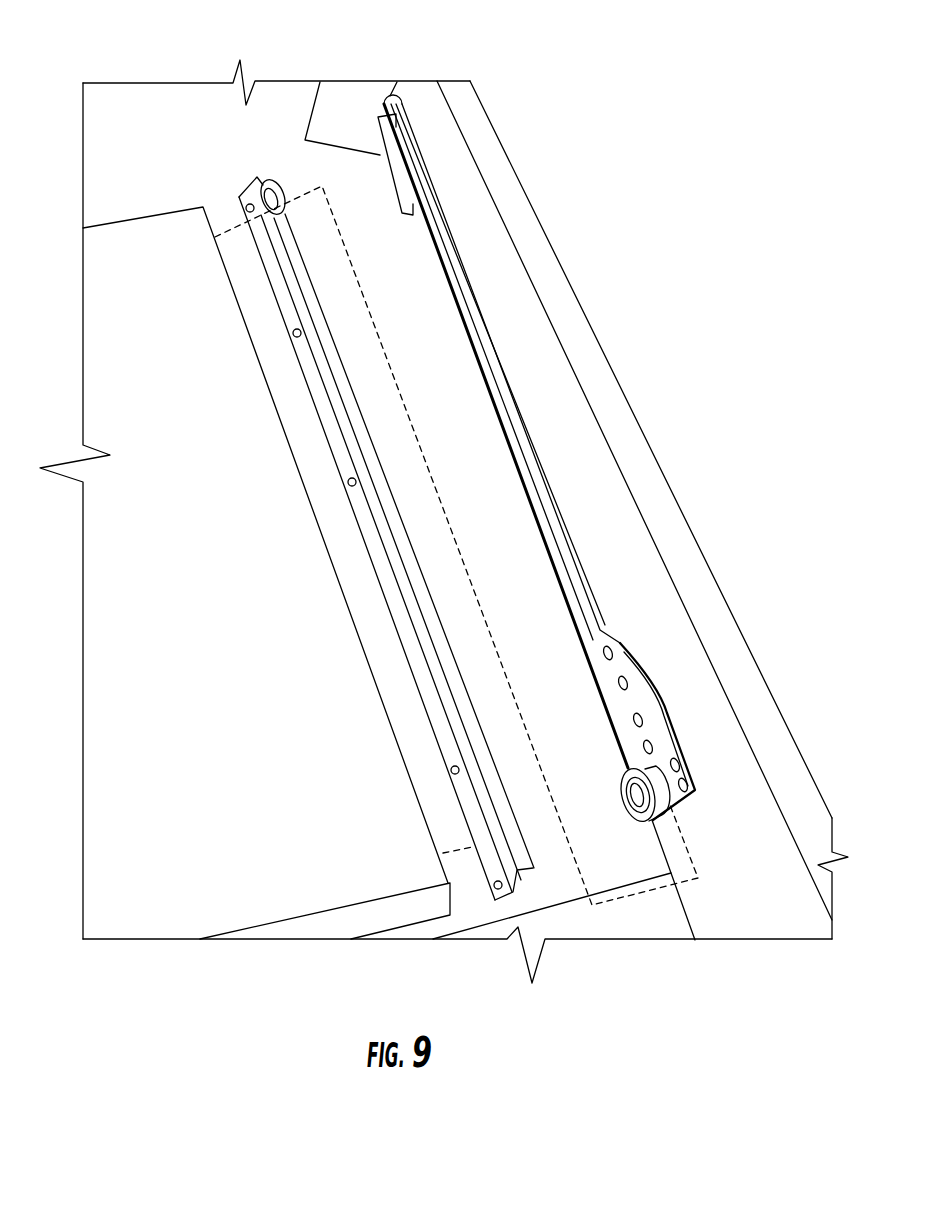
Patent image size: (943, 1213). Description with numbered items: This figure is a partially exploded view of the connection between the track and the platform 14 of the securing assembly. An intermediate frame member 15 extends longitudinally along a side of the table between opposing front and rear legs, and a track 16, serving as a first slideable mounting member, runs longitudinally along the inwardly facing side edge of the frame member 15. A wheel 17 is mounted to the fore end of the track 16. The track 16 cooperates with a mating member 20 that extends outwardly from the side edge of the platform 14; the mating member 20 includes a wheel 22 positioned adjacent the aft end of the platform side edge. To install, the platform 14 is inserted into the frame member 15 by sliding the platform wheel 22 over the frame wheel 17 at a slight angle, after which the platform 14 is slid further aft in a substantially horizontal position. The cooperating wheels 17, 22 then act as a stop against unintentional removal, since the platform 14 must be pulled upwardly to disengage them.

The platform 14 is at (215, 903).
The frame member 15 is at (485, 215).
The track 16 is at (513, 387).
The wheel 17 is at (653, 788).
The mating member 20 is at (518, 847).
The wheel 22 is at (270, 180).